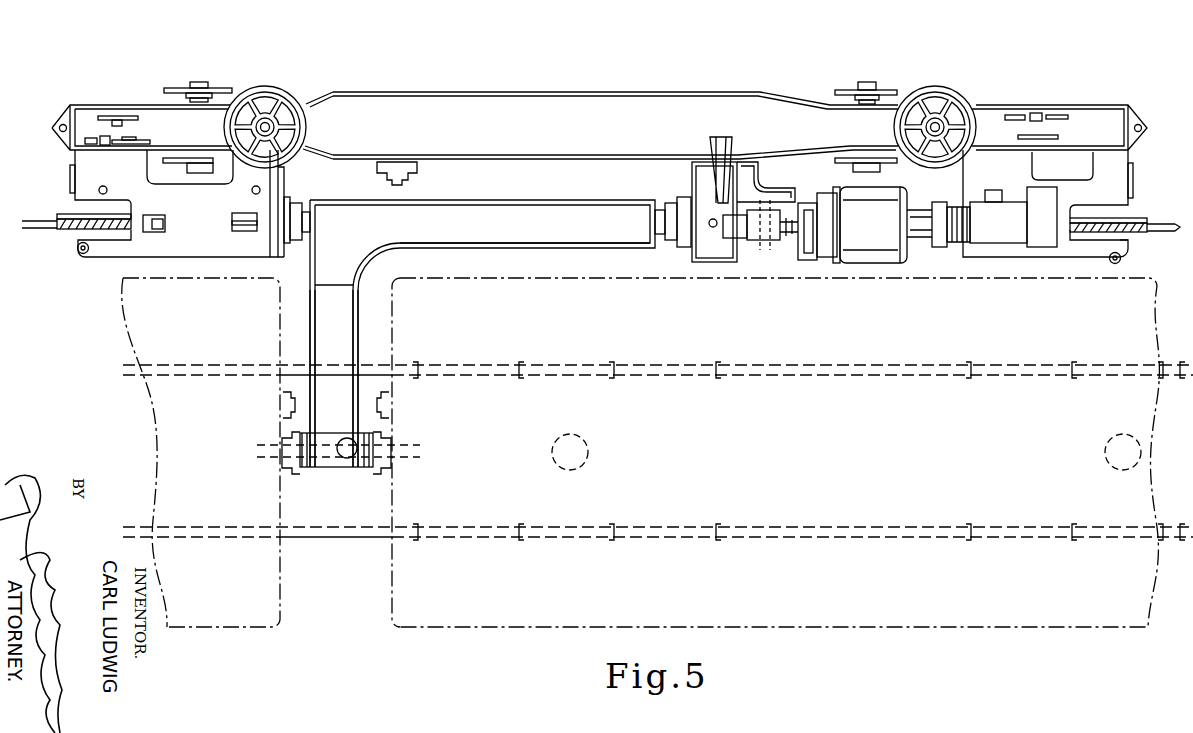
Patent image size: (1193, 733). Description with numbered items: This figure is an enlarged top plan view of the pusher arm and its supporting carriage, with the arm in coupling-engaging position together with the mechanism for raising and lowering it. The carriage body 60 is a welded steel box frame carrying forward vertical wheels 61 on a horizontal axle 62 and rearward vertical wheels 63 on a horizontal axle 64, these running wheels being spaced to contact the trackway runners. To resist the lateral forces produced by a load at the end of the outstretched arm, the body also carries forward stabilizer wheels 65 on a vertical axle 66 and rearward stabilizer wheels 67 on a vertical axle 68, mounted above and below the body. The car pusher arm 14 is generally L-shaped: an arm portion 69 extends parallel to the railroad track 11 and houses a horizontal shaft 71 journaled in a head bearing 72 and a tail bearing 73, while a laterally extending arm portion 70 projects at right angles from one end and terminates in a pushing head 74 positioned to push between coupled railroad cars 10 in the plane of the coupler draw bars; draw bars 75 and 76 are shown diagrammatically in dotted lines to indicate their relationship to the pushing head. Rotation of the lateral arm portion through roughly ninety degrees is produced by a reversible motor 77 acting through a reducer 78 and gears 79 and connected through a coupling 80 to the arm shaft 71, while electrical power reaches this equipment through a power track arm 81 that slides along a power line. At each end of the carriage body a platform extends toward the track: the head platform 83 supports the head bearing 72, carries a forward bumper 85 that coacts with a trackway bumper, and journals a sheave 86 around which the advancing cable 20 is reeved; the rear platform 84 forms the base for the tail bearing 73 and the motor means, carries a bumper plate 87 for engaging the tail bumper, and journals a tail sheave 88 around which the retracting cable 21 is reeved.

The railroad cars 10 is at (272, 600).
The railroad track 11 is at (298, 362).
The car pusher arm 14 is at (532, 254).
The advancing cable 20 is at (42, 229).
The retracting cable 21 is at (1148, 235).
The carriage body 60 is at (537, 92).
The forward vertical wheels 61 is at (230, 88).
The horizontal axle 62 is at (200, 82).
The rearward vertical wheels 63 is at (900, 88).
The horizontal axle 64 is at (868, 82).
The forward stabilizer wheels 65 is at (266, 86).
The vertical axle 66 is at (268, 124).
The rearward stabilizer wheels 67 is at (947, 88).
The vertical axle 68 is at (940, 123).
The arm portion 69 is at (503, 215).
The laterally extending arm portion 70 is at (335, 342).
The shaft 71 is at (302, 205).
The head bearing 72 is at (288, 200).
The tail bearing 73 is at (681, 208).
The pushing head 74 is at (305, 465).
The draw bar 75 is at (293, 478).
The draw bar 76 is at (373, 478).
The reversible motor 77 is at (985, 246).
The reducer 78 is at (870, 250).
The gears 79 is at (820, 246).
The coupling 80 is at (768, 240).
The power track arm 81 is at (728, 152).
The platform 83 is at (175, 246).
The rear platform 84 is at (1115, 170).
The forward bumper 85 is at (70, 177).
The sheave 86 is at (74, 234).
The bumper plate 87 is at (1135, 182).
The tail sheave 88 is at (1135, 220).